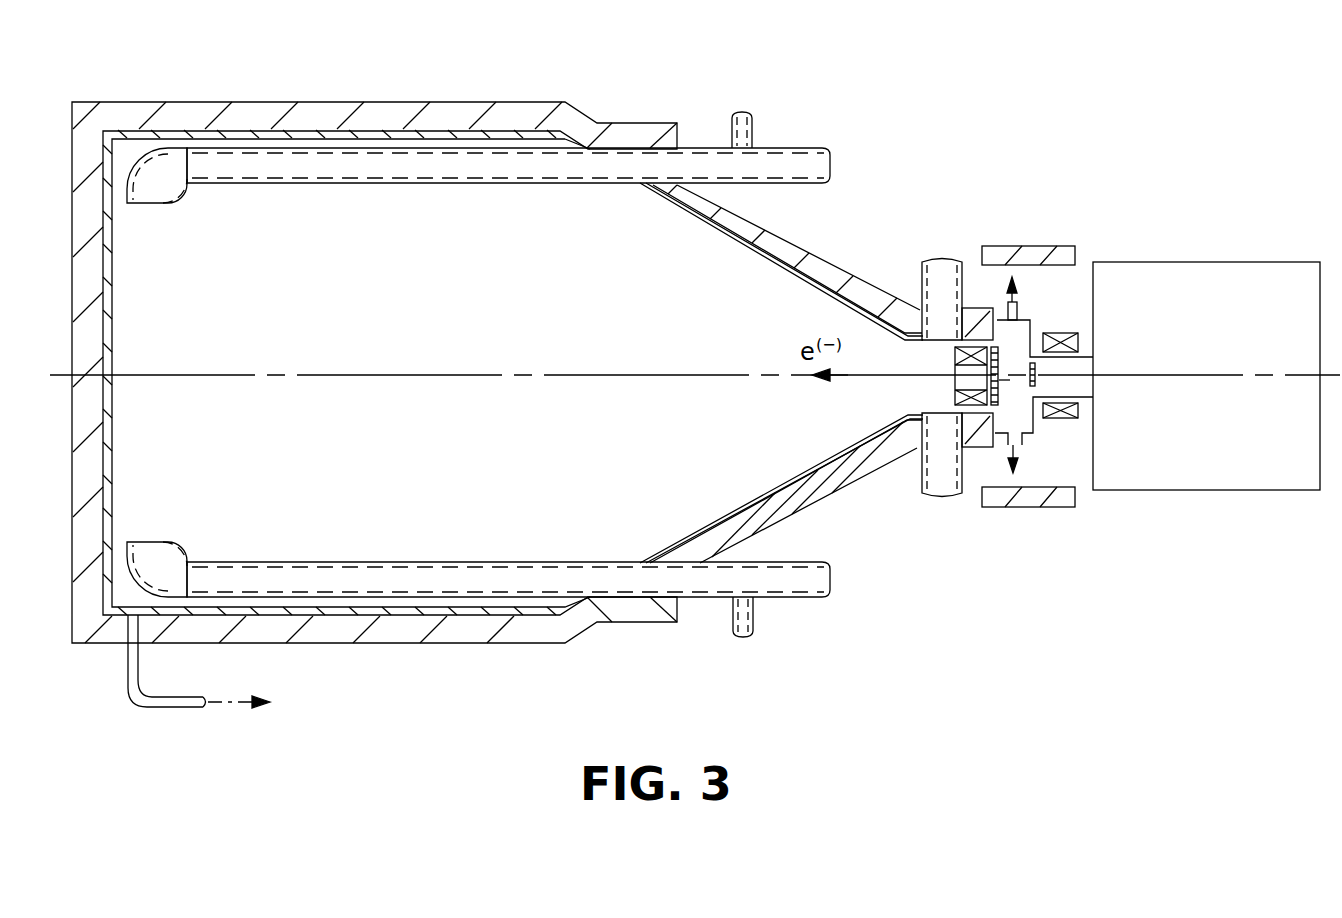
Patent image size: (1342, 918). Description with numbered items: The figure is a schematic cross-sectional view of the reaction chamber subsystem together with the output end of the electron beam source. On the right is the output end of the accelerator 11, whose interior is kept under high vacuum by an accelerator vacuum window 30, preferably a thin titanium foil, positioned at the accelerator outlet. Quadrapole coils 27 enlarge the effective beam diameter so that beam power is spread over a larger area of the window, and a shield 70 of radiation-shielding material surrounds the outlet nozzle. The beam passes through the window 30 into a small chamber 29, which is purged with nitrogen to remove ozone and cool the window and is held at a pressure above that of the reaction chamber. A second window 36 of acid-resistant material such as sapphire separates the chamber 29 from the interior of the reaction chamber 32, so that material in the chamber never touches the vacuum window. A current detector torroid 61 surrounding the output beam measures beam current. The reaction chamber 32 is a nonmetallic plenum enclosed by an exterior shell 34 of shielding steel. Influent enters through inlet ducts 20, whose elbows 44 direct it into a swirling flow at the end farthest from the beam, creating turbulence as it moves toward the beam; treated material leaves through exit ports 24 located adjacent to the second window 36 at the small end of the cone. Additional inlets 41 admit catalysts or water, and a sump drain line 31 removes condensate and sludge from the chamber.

The accelerator 11 is at (1195, 490).
The inlet ducts 20 is at (828, 167).
The exit ports 24 is at (940, 300).
The quadrapole coils 27 is at (1078, 334).
The small chamber 29 is at (1031, 363).
The accelerator vacuum window 30 is at (1029, 322).
The sump drain line 31 is at (178, 708).
The reaction chamber 32 is at (318, 131).
The exterior shell 34 is at (456, 103).
The second window 36 is at (999, 384).
The additional inlets 41 is at (741, 98).
The elbows 44 is at (166, 160).
The current detector torroid 61 is at (993, 347).
The shield 70 is at (1063, 246).